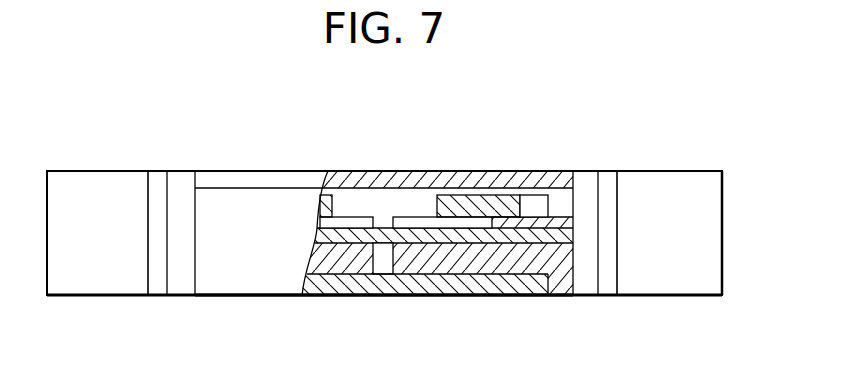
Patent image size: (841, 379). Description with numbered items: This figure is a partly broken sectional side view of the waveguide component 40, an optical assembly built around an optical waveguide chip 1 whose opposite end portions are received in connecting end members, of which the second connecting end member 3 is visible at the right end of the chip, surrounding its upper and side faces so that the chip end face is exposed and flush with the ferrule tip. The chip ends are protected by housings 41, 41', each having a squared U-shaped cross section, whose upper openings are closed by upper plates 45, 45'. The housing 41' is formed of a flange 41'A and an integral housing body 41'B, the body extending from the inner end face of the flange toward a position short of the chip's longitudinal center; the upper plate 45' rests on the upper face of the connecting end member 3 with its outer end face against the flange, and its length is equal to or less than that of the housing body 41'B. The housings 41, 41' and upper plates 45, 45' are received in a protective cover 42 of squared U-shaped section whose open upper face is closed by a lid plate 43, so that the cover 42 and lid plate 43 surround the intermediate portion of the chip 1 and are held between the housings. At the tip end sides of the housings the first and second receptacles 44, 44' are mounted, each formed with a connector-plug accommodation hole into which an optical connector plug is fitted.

The waveguide component 40 is at (707, 133).
The housing 41 is at (382, 203).
The housing 41' is at (406, 166).
The flange 41'A is at (457, 288).
The housing body 41'B is at (424, 318).
The protective cover 42 is at (255, 288).
The lid plate 43 is at (242, 171).
The first receptacle 44 is at (107, 211).
The second receptacle 44' is at (661, 210).
The upper plate 45 is at (312, 170).
The upper plate 45' is at (478, 157).
The second connecting end member 3 is at (534, 212).
The optical waveguide chip 1 is at (365, 240).